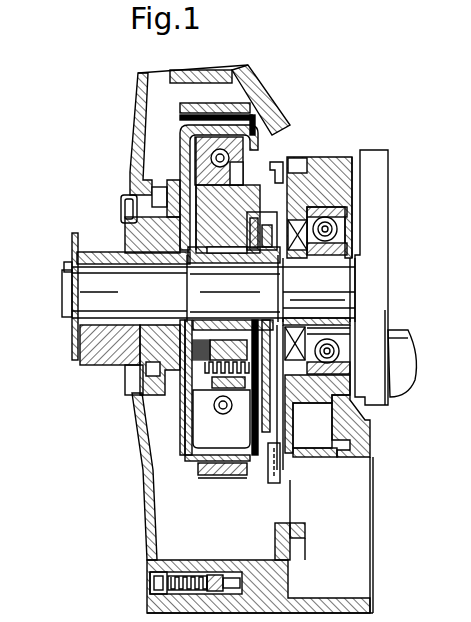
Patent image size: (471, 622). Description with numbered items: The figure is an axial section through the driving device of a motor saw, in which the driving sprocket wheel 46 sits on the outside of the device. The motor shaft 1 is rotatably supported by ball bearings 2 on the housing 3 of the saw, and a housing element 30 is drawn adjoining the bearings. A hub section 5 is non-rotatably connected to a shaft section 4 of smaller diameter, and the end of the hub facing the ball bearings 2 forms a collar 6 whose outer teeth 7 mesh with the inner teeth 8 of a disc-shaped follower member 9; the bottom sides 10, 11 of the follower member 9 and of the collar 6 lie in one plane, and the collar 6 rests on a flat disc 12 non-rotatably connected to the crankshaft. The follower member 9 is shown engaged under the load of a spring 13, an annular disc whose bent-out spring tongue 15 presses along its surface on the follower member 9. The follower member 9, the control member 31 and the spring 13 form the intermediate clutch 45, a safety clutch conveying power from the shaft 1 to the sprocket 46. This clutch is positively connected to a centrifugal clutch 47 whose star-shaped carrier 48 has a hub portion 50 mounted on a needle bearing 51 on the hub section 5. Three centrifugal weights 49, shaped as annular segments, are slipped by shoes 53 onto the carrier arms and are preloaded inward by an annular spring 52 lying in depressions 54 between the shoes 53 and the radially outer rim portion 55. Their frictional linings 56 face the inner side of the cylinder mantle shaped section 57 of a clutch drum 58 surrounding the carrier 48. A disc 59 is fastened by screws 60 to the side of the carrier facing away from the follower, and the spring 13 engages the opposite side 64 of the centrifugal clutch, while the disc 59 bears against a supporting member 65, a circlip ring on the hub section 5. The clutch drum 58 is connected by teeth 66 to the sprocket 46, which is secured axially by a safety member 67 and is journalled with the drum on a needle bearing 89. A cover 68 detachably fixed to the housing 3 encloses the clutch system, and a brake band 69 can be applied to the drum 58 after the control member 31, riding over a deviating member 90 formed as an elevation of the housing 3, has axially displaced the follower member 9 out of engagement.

The motor shaft 1 is at (337, 301).
The ball bearings 2 is at (350, 234).
The housing 3 is at (372, 606).
The shaft section 4 is at (230, 290).
The hub section 5 is at (193, 258).
The collar 6 is at (352, 216).
The outer teeth 7 is at (341, 352).
The inner teeth 8 is at (345, 192).
The follower member 9 is at (340, 398).
The bottom side 10 is at (386, 399).
The bottom side 11 is at (320, 336).
The flat disc 12 is at (284, 256).
The spring 13 is at (290, 398).
The spring tongue 15 is at (318, 387).
The housing 30 is at (300, 197).
The control member 31 is at (309, 463).
The intermediate clutch 45 is at (263, 502).
The driving sprocket wheel 46 is at (88, 345).
The centrifugal clutch 47 is at (185, 466).
The star-shaped carrier 48 is at (180, 178).
The centrifugal weights 49 is at (206, 120).
The hub portion 50 is at (183, 400).
The needle bearing 51 is at (143, 382).
The annular spring 52 is at (228, 150).
The shoes 53 is at (275, 193).
The depressions 54 is at (258, 170).
The radially outer rim portion 55 is at (243, 153).
The frictional linings 56 is at (255, 470).
The cylinder mantle shaped section 57 is at (217, 476).
The clutch drum 58 is at (182, 456).
The disc 59 is at (180, 138).
The screws 60 is at (125, 371).
The side of the centrifugal clutch 64 is at (245, 400).
The supporting member 65 is at (172, 318).
The teeth 66 is at (124, 216).
The safety member 67 is at (76, 270).
The cover 68 is at (146, 518).
The brake band 69 is at (200, 473).
The needle bearing 89 is at (104, 266).
The deviating member 90 is at (305, 512).